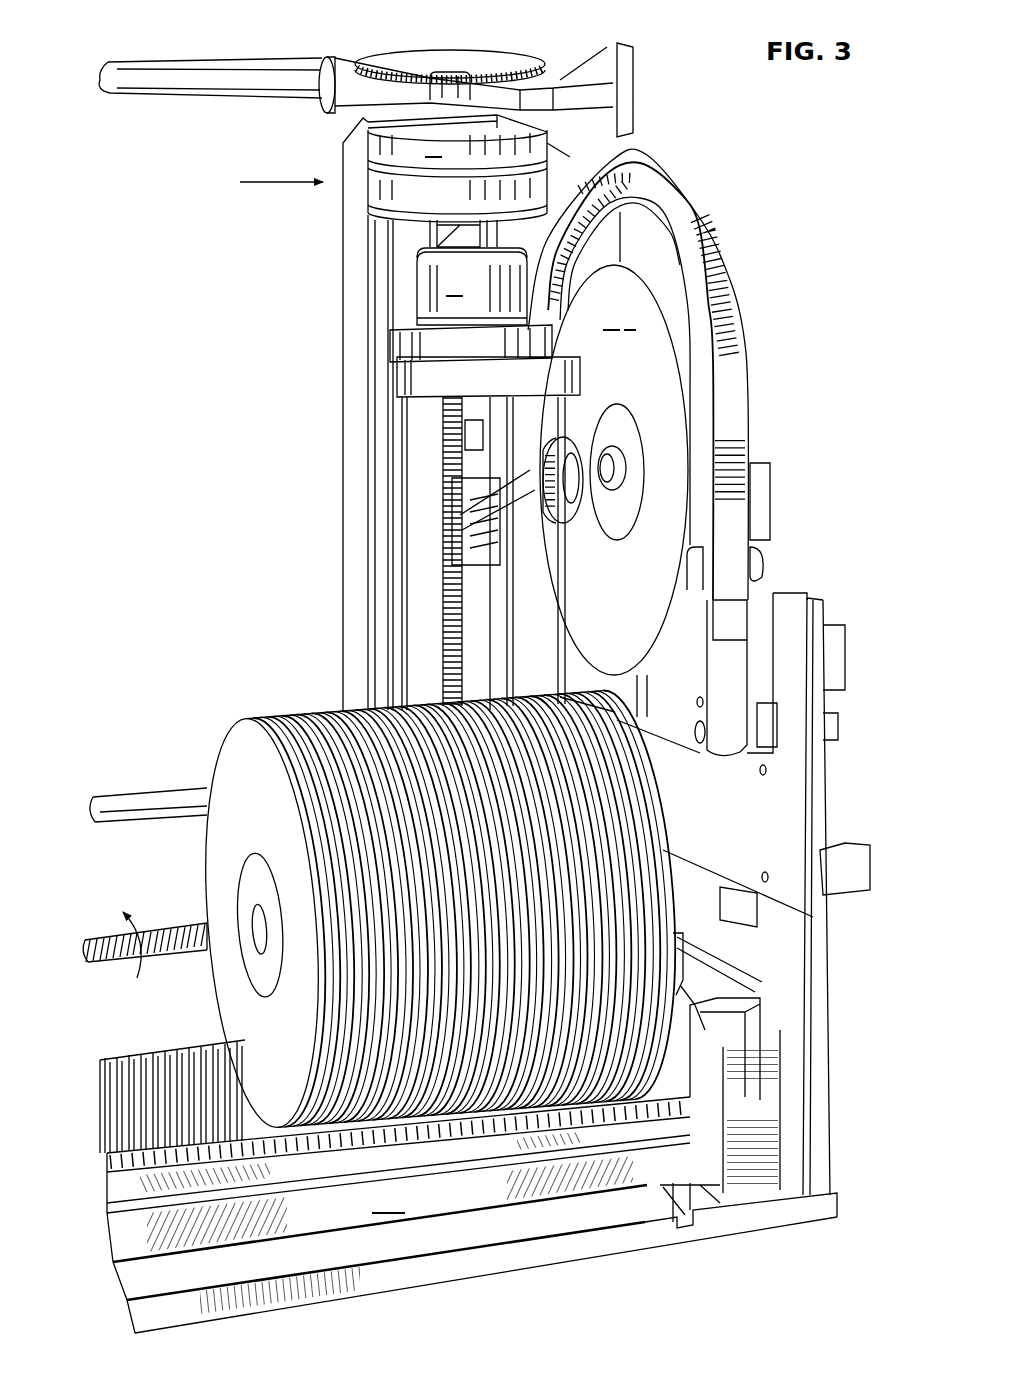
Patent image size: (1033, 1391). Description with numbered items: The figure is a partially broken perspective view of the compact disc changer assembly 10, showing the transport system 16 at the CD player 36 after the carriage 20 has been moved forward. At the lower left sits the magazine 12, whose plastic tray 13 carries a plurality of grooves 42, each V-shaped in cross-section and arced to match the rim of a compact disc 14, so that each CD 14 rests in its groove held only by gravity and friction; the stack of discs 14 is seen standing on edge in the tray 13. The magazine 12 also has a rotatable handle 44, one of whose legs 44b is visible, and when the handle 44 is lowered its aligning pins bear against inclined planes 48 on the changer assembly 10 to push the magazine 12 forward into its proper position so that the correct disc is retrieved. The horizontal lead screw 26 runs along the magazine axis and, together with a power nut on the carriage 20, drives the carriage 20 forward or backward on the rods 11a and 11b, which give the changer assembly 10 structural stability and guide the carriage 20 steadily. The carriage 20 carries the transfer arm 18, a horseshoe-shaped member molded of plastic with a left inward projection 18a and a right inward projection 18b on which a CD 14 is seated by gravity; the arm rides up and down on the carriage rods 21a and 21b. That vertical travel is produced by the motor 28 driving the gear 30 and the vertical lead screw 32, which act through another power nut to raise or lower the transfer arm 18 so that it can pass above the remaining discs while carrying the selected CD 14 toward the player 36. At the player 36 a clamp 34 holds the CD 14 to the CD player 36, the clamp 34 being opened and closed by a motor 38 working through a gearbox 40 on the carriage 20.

The compact disc changer assembly 10 is at (782, 455).
The rod 11a is at (213, 95).
The rod 11b is at (183, 798).
The magazine 12 is at (88, 1085).
The tray 13 is at (113, 1067).
The compact disc 14 is at (232, 717).
The transport system 16 is at (338, 255).
The transfer arm 18 is at (705, 257).
The left inward projection 18a is at (712, 572).
The right inward projection 18b is at (500, 560).
The carriage 20 is at (355, 424).
The rod 21a is at (537, 630).
The rod 21b is at (388, 615).
The horizontal lead screw 26 is at (163, 933).
The motor 28 is at (370, 186).
The gear 30 is at (517, 45).
The vertical lead screw 32 is at (445, 485).
The clamp 34 is at (470, 513).
The CD player 36 is at (700, 640).
The motor 38 is at (425, 292).
The gearbox 40 is at (410, 345).
The groove 42 is at (152, 1047).
The rotatable handle 44 is at (398, 1179).
The leg 44b is at (700, 1025).
The inclined plane 48 is at (700, 997).